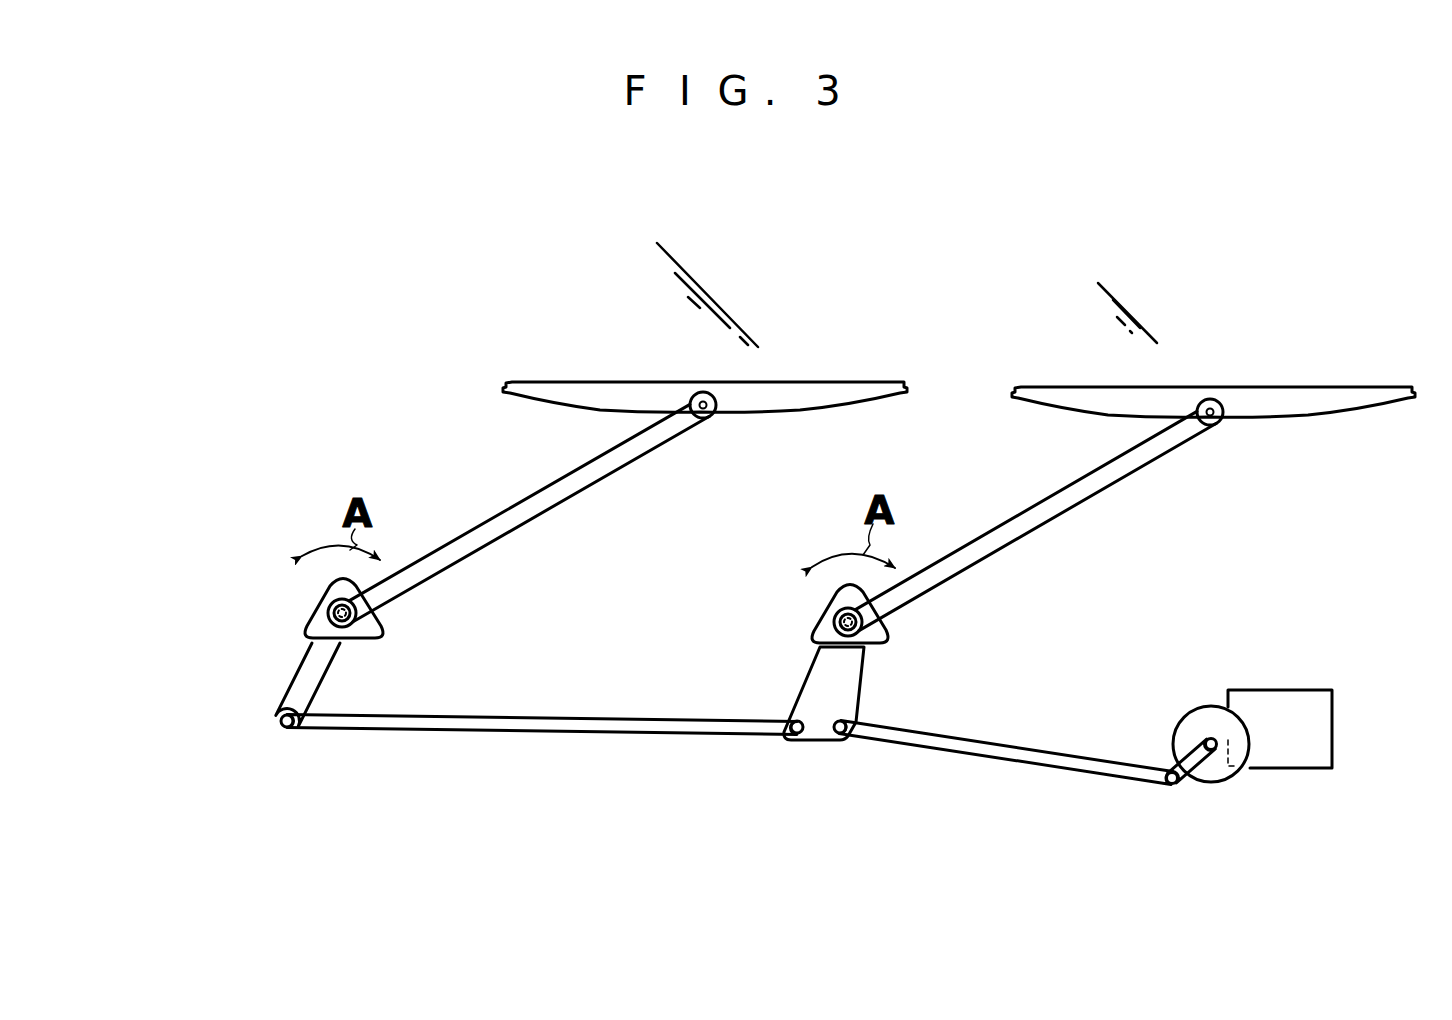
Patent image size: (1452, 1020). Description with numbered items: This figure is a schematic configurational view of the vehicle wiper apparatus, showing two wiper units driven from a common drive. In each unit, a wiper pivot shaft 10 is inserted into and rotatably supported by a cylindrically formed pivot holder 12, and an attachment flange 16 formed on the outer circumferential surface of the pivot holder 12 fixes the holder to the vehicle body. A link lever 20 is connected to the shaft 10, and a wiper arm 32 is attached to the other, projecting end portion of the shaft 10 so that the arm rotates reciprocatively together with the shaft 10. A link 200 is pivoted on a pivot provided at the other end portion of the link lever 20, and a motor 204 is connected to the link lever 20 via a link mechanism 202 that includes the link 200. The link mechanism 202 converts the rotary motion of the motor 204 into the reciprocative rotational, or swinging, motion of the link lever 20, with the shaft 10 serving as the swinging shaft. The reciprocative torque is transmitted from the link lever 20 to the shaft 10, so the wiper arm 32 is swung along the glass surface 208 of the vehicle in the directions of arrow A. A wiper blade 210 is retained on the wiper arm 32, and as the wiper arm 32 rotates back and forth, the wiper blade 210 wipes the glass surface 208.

The wiper pivot shaft 10 is at (334, 614).
The pivot holder 12 is at (303, 600).
The attachment flange 16 is at (384, 628).
The link lever 20 is at (338, 672).
The wiper arm 32 is at (540, 528).
The link 200 is at (992, 752).
The link mechanism 202 is at (1130, 788).
The motor 204 is at (1272, 688).
The glass surface 208 is at (987, 300).
The wiper blade 210 is at (788, 382).